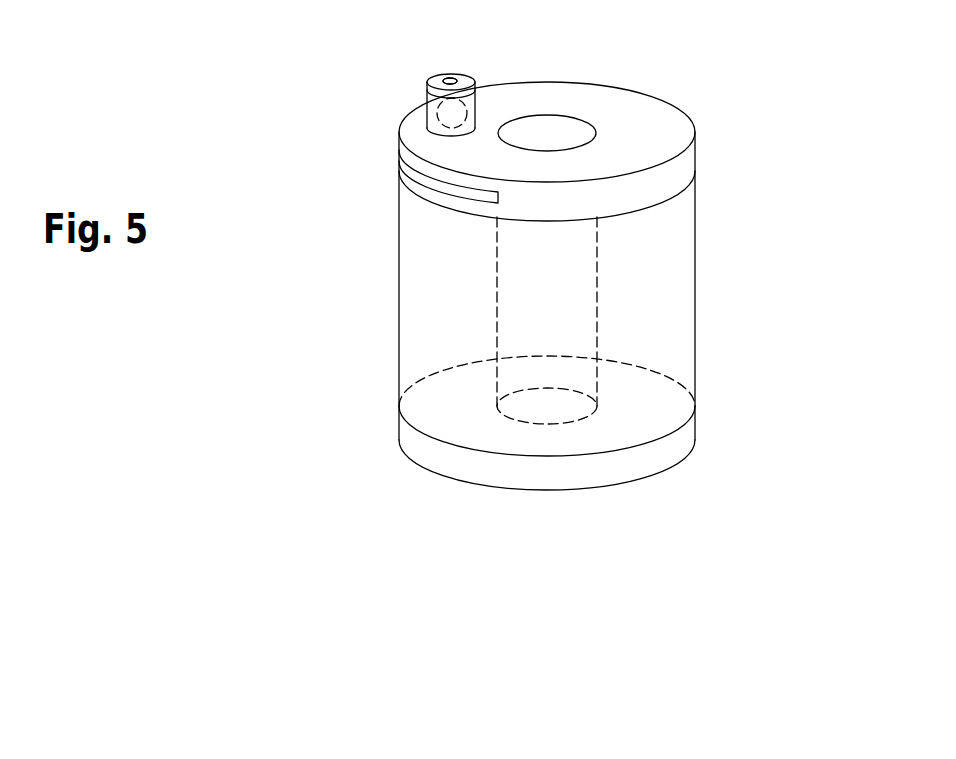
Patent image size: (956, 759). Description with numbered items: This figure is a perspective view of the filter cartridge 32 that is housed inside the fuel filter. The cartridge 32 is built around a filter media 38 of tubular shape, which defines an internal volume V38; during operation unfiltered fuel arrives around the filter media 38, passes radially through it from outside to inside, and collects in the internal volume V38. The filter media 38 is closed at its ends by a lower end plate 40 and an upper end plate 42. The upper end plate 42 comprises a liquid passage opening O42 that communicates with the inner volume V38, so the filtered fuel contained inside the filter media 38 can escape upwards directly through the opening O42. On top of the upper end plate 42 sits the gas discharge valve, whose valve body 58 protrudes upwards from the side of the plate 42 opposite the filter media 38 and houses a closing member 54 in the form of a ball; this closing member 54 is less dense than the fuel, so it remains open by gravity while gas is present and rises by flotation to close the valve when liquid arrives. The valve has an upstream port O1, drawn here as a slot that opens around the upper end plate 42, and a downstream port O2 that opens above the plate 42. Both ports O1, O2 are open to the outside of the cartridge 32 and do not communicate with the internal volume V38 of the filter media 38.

The filter cartridge 32 is at (569, 250).
The filter media 38 is at (645, 280).
The lower end plate 40 is at (670, 450).
The upper end plate 42 is at (647, 122).
The closing member 54 is at (427, 96).
The valve body 58 is at (467, 82).
The upstream port O1 is at (439, 203).
The downstream port O2 is at (443, 62).
The liquid passage opening O42 is at (552, 120).
The internal volume V38 is at (547, 320).